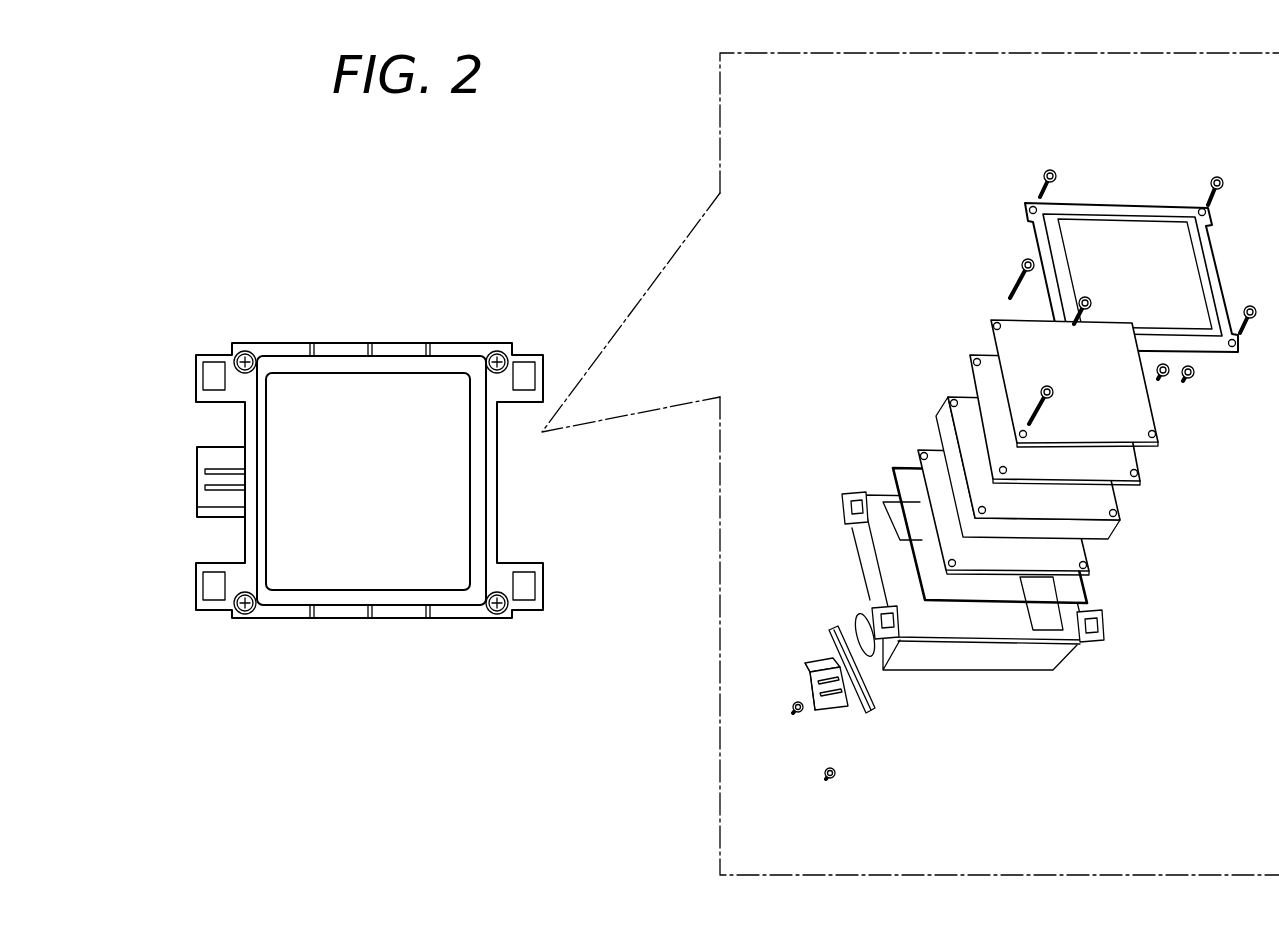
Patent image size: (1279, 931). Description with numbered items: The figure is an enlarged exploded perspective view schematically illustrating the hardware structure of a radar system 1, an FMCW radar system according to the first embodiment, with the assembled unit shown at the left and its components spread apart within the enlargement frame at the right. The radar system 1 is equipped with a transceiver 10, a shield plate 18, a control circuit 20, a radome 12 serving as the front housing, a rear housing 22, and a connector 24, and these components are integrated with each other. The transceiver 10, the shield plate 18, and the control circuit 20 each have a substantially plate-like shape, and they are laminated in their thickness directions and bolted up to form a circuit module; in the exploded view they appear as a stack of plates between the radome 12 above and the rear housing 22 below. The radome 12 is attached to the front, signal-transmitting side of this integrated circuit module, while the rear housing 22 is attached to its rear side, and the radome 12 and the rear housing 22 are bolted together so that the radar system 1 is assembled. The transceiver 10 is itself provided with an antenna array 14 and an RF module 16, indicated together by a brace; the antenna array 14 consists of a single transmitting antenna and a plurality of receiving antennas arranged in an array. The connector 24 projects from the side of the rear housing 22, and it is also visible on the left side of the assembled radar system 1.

The radar system 1 is at (371, 324).
The transceiver 10 is at (893, 270).
The radome 12 is at (305, 388).
The antenna array 14 is at (988, 323).
The RF module 16 is at (969, 358).
The shield plate 18 is at (946, 398).
The control circuit 20 is at (1090, 577).
The rear housing 22 is at (1056, 667).
The connector 24 is at (197, 478).